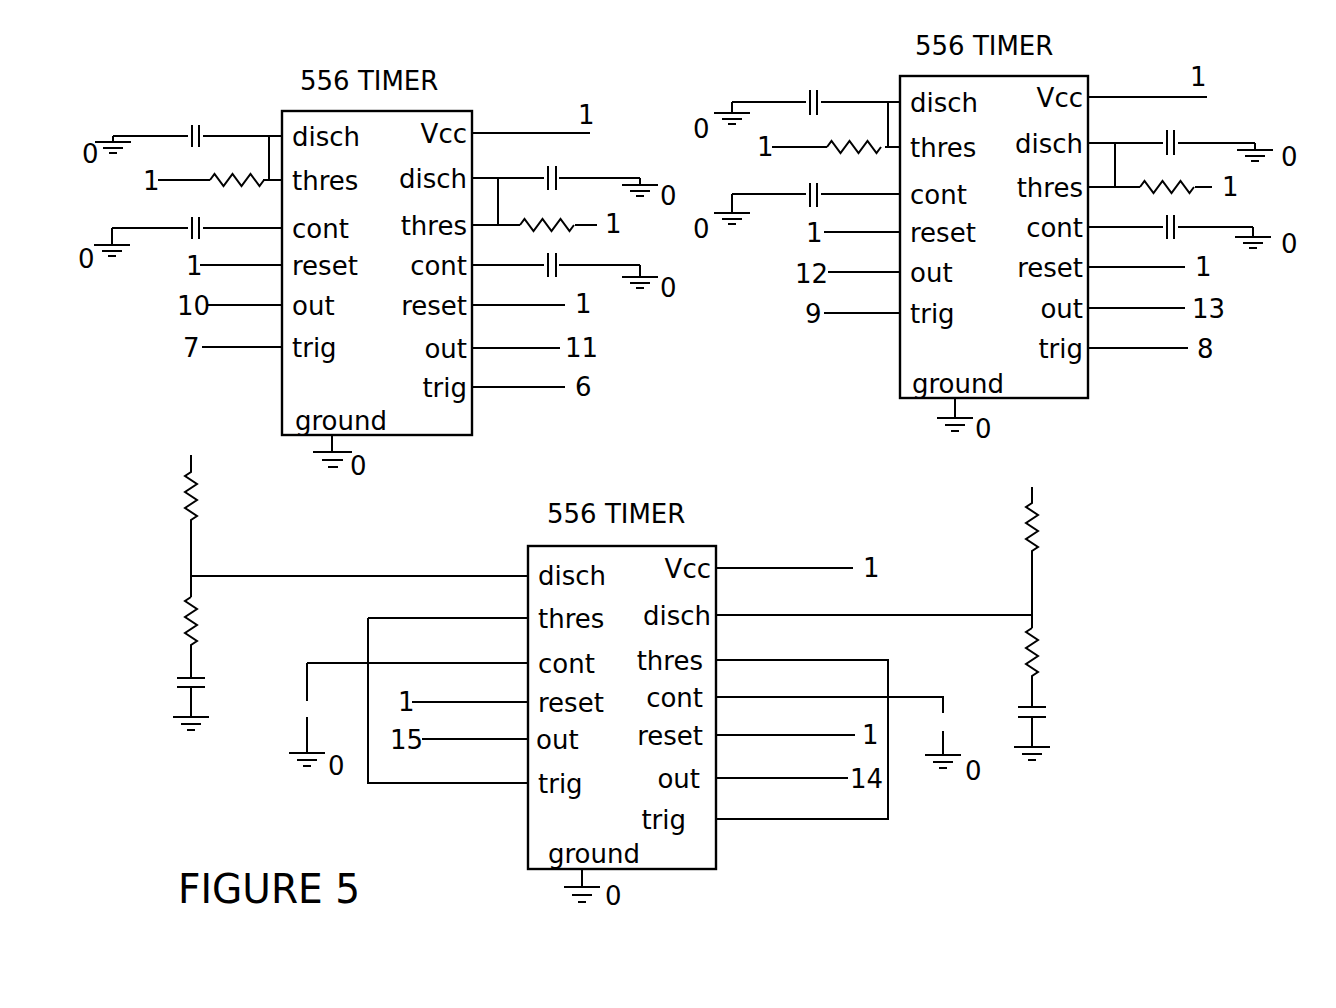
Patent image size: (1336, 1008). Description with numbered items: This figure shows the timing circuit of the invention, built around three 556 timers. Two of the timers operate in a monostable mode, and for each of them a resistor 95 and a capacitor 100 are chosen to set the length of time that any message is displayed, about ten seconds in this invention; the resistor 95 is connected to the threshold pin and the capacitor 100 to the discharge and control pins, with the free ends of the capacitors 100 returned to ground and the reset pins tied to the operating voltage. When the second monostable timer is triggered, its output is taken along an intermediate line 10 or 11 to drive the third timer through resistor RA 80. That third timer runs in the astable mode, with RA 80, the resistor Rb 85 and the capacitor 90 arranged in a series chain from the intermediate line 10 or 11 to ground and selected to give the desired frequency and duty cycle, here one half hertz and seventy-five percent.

The resistor RA 80 is at (619, 541).
The resistor 85 is at (615, 652).
The capacitor 90 is at (621, 724).
The resistor 95 is at (702, 177).
The capacitor 100 is at (688, 173).
The intermediate line 10 is at (1038, 476).
The intermediate line 11 is at (203, 443).